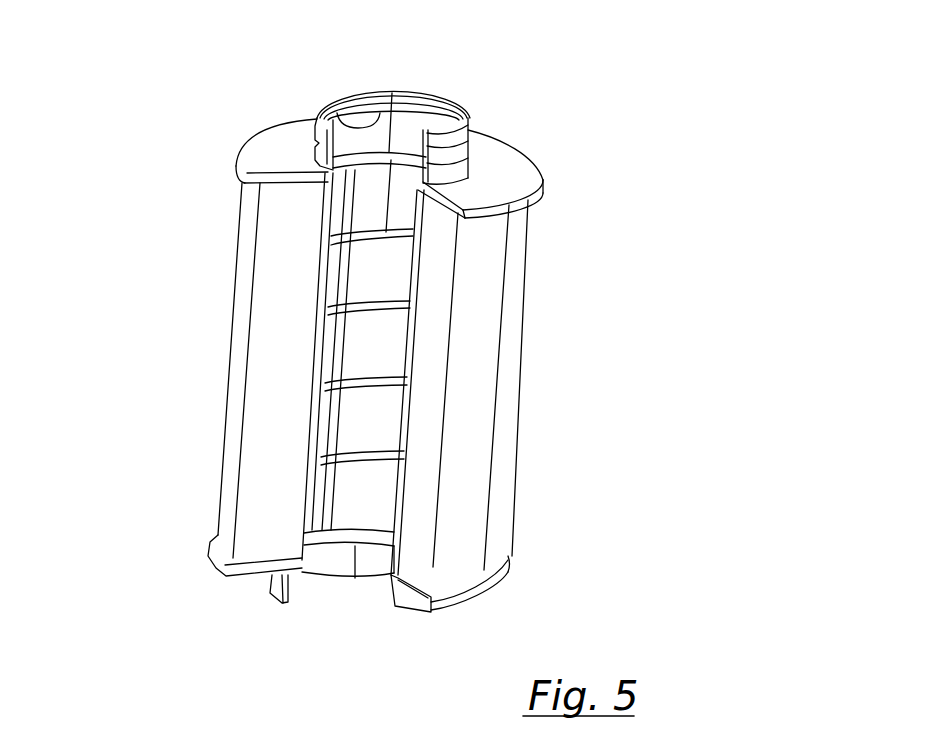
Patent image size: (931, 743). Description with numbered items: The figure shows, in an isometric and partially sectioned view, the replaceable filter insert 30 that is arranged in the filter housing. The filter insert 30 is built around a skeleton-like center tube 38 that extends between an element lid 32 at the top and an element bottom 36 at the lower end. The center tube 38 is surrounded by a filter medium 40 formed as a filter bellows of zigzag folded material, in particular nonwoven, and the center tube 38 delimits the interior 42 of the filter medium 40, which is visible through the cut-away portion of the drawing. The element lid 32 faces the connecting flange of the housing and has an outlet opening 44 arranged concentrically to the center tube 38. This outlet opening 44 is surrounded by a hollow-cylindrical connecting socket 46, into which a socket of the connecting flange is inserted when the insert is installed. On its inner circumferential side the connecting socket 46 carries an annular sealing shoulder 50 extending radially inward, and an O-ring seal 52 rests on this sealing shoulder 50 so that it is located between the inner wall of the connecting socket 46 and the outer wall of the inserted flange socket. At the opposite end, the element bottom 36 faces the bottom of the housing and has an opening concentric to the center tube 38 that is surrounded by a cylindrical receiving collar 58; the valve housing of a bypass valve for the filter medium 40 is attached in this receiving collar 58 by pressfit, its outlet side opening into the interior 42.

The filter insert 30 is at (84, 146).
The element lid 32 is at (492, 178).
The element bottom 36 is at (480, 597).
The center tube 38 is at (400, 387).
The filter medium 40 is at (455, 475).
The interior 42 is at (373, 347).
The outlet opening 44 is at (363, 132).
The connecting socket 46 is at (467, 127).
The annular sealing shoulder 50 is at (362, 126).
The O-ring seal 52 is at (393, 118).
The receiving collar 58 is at (410, 608).